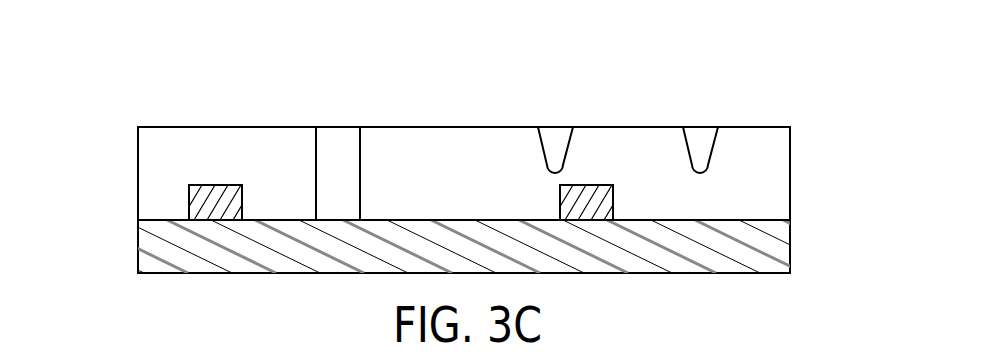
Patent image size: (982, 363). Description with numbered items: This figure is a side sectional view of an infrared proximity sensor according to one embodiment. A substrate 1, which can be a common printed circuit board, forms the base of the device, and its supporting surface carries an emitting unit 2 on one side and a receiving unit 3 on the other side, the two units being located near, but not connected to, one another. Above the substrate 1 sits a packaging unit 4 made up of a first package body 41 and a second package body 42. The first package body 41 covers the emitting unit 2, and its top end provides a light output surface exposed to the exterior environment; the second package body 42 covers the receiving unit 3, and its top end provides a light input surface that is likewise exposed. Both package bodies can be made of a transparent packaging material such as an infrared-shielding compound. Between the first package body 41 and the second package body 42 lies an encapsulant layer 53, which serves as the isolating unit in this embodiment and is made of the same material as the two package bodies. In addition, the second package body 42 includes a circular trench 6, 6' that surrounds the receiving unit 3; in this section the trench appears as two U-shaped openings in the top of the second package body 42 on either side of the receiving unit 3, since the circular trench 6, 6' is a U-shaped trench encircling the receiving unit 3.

The substrate 1 is at (760, 253).
The emitting unit 2 is at (216, 193).
The receiving unit 3 is at (598, 192).
The packaging unit 4 is at (73, 143).
The first package body 41 is at (157, 166).
The second package body 42 is at (753, 183).
The encapsulant layer 53 is at (336, 177).
The circular trench 6 is at (555, 110).
The circular trench 6' is at (700, 110).